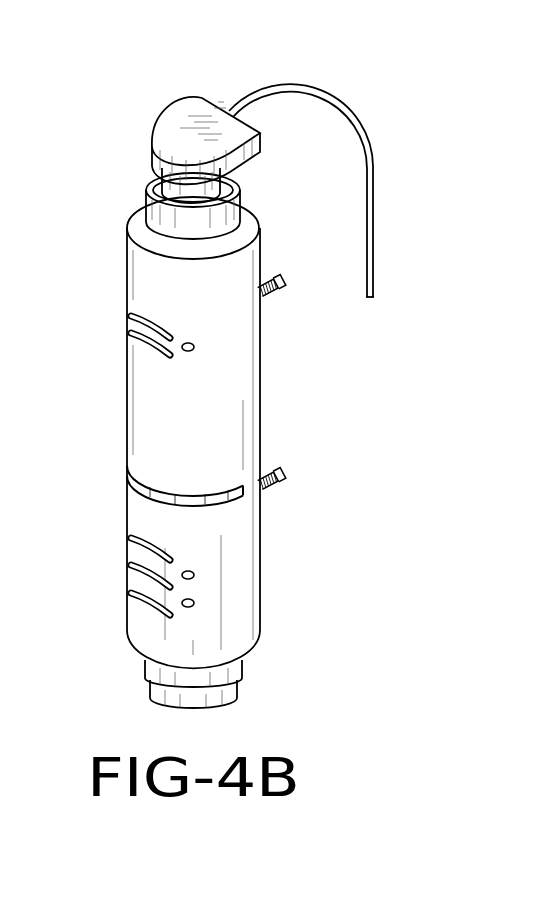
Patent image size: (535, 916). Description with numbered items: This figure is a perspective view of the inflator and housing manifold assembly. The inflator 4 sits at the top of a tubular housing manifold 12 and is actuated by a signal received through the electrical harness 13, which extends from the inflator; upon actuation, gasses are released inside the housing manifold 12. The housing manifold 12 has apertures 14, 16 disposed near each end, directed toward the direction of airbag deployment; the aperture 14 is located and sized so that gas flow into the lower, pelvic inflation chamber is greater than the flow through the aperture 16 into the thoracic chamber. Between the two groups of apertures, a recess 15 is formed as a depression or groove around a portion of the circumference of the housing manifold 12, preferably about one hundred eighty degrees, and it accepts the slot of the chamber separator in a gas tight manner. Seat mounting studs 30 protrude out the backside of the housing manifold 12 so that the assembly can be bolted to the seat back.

The inflator 4 is at (193, 113).
The housing manifold 12 is at (138, 218).
The electrical harness 13 is at (322, 102).
The aperture 14 is at (137, 602).
The recess 15 is at (147, 492).
The aperture 16 is at (147, 350).
The seat mounting studs 30 is at (280, 278).